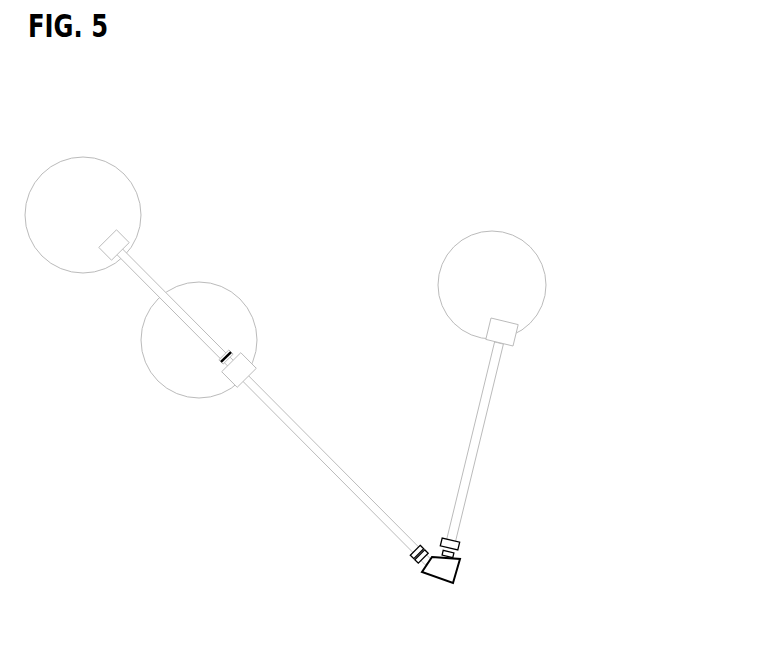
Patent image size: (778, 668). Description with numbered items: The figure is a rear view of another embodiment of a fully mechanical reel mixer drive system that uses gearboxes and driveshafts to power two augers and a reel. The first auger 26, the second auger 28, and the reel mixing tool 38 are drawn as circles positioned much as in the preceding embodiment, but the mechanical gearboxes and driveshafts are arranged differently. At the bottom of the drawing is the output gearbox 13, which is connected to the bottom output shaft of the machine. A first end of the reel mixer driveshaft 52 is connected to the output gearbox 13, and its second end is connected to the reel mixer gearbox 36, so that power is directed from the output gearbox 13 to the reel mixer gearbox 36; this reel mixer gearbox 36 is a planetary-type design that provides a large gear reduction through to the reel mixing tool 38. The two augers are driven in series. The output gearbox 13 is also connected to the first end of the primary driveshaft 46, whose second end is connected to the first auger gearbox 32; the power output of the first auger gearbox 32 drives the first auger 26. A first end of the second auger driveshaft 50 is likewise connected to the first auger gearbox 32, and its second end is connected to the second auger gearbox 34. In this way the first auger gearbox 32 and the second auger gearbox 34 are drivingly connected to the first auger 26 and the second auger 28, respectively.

The output gearbox 13 is at (452, 583).
The first auger 26 is at (240, 300).
The second auger 28 is at (122, 178).
The first auger gearbox 32 is at (257, 372).
The second auger gearbox 34 is at (130, 247).
The reel mixer gearbox 36 is at (520, 340).
The reel mixing tool 38 is at (540, 258).
The primary driveshaft 46 is at (265, 402).
The second auger driveshaft 50 is at (138, 288).
The reel mixer driveshaft 52 is at (475, 460).